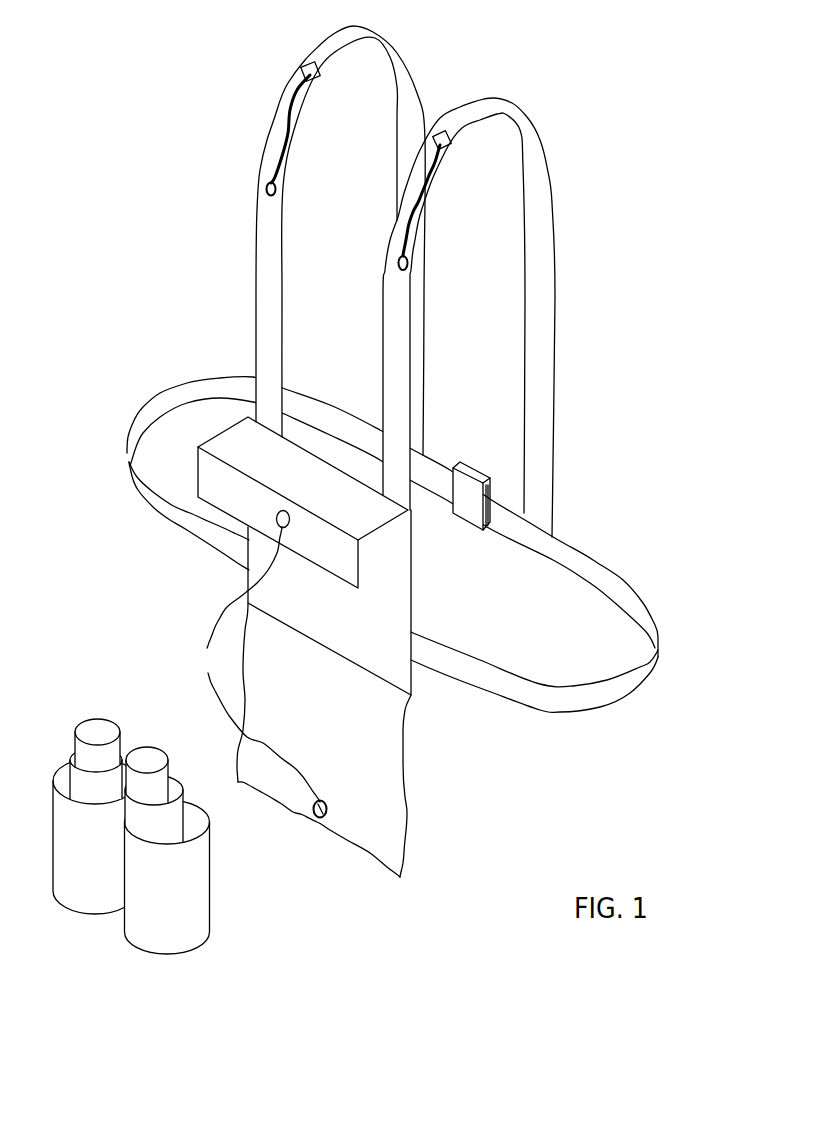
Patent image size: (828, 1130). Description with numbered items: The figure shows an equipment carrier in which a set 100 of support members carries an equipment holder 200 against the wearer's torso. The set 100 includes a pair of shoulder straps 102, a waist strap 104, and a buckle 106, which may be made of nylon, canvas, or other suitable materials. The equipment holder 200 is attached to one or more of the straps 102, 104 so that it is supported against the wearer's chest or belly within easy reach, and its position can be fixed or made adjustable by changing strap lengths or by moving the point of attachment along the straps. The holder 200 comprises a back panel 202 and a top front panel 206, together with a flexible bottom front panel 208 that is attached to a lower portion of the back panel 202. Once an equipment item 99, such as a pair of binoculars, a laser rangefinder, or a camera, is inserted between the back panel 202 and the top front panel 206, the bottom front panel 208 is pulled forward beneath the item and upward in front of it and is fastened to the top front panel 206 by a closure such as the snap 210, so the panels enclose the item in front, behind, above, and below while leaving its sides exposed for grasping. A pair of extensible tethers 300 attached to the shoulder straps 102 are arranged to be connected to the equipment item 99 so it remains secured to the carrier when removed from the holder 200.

The set of support members 100 is at (600, 377).
The shoulder straps 102 is at (397, 67).
The waist strap 104 is at (178, 392).
The buckle 106 is at (467, 487).
The equipment holder 200 is at (152, 598).
The back panel 202 is at (393, 590).
The top front panel 206 is at (240, 440).
The flexible bottom front panel 208 is at (380, 760).
The snap 210 is at (256, 657).
The extensible tethers 300 is at (288, 137).
The equipment item 99 is at (197, 907).